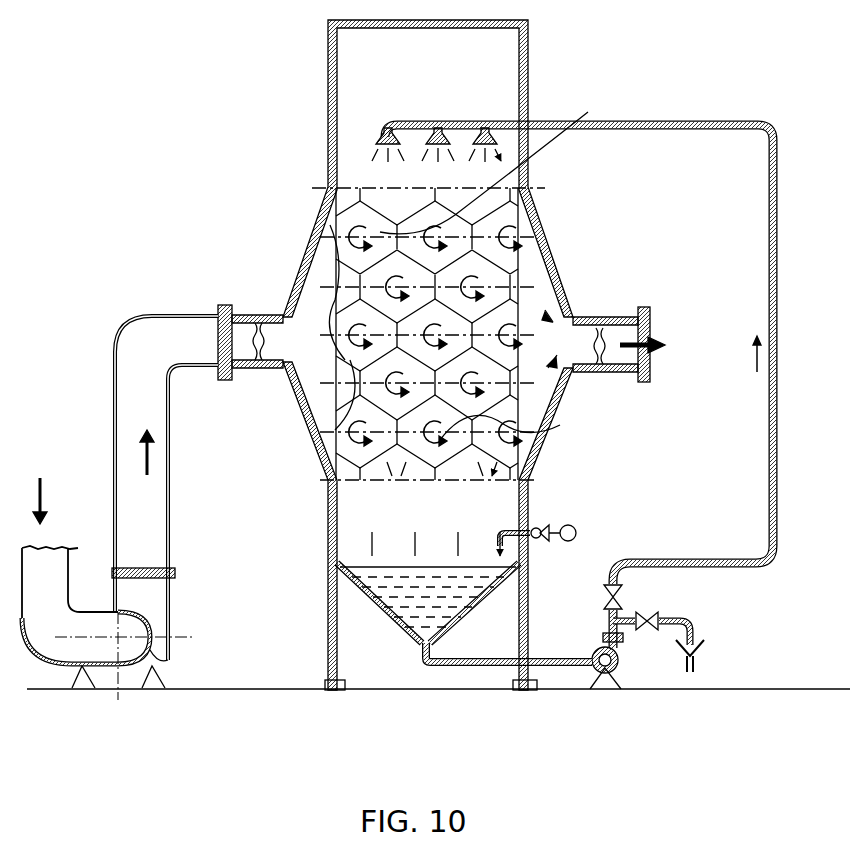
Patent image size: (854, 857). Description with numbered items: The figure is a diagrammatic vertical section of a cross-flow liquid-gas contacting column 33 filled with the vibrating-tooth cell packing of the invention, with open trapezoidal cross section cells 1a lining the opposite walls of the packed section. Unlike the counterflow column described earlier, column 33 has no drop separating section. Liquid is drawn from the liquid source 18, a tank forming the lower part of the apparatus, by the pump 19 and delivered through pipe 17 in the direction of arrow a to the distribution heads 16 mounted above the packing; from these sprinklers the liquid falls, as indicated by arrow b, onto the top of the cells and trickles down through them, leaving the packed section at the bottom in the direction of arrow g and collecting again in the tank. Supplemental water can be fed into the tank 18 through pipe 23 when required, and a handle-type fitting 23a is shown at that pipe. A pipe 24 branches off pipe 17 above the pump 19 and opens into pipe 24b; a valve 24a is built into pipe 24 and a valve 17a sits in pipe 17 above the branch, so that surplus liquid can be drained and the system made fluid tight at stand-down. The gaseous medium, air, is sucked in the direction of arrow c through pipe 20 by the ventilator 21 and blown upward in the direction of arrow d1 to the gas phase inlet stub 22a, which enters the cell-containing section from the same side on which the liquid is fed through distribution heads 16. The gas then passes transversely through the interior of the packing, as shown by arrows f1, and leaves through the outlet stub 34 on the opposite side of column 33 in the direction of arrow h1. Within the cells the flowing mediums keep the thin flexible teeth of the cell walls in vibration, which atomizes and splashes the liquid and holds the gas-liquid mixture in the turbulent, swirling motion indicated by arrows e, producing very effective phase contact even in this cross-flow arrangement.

The open trapezoidal cross section cell 1a is at (345, 285).
The distribution head 16 is at (470, 124).
The pipe 17 is at (768, 262).
The valve 17a is at (604, 597).
The liquid source 18 is at (400, 617).
The pump 19 is at (600, 690).
The pipe 20 is at (47, 567).
The ventilator 21 is at (152, 658).
The gas phase inlet stub 22a is at (248, 372).
The pipe 23 is at (532, 514).
The drain valve handle 23a is at (576, 526).
The pipe 24 is at (690, 617).
The valve 24a is at (645, 612).
The pipe 24b is at (705, 645).
The cross-flow column 33 is at (328, 100).
The outlet stub 34 is at (612, 372).
The arrow a is at (757, 357).
The arrow b is at (400, 158).
The arrow c is at (42, 500).
The arrow d1 is at (150, 462).
The arrow e is at (600, 438).
The arrow f1 is at (275, 462).
The arrow g is at (360, 553).
The arrow h1 is at (655, 340).